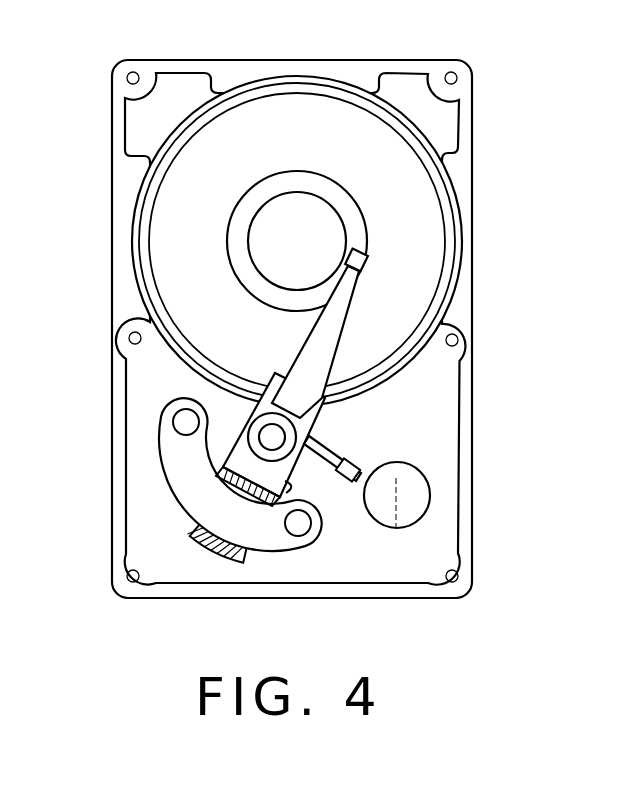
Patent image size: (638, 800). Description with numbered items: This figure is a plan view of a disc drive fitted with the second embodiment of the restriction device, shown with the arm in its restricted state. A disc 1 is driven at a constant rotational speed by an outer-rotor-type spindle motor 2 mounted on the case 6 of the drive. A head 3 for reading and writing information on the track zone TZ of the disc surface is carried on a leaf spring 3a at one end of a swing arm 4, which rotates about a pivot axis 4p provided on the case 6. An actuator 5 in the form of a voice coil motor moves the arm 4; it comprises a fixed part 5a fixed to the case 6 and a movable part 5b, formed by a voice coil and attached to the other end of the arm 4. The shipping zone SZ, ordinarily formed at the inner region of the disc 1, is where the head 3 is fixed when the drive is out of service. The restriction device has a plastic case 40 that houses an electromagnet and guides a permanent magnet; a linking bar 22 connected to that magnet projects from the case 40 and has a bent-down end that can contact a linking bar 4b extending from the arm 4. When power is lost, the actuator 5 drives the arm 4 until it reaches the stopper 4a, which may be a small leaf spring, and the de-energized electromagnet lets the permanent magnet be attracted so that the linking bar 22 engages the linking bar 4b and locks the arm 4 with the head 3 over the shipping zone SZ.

The disc 1 is at (165, 150).
The case 6 is at (466, 65).
The track zone TZ is at (217, 135).
The shipping zone SZ is at (272, 173).
The spindle motor 2 is at (250, 240).
The head 3 is at (368, 252).
The leaf spring 3a is at (336, 334).
The swing arm 4 is at (247, 400).
The pivot axis 4p is at (278, 437).
The stopper 4a is at (292, 487).
The linking bar 4b is at (352, 453).
The actuator 5 is at (110, 554).
The fixed part 5a is at (178, 452).
The movable part 5b is at (193, 535).
The linking bar 22 is at (355, 485).
The case 40 is at (432, 492).